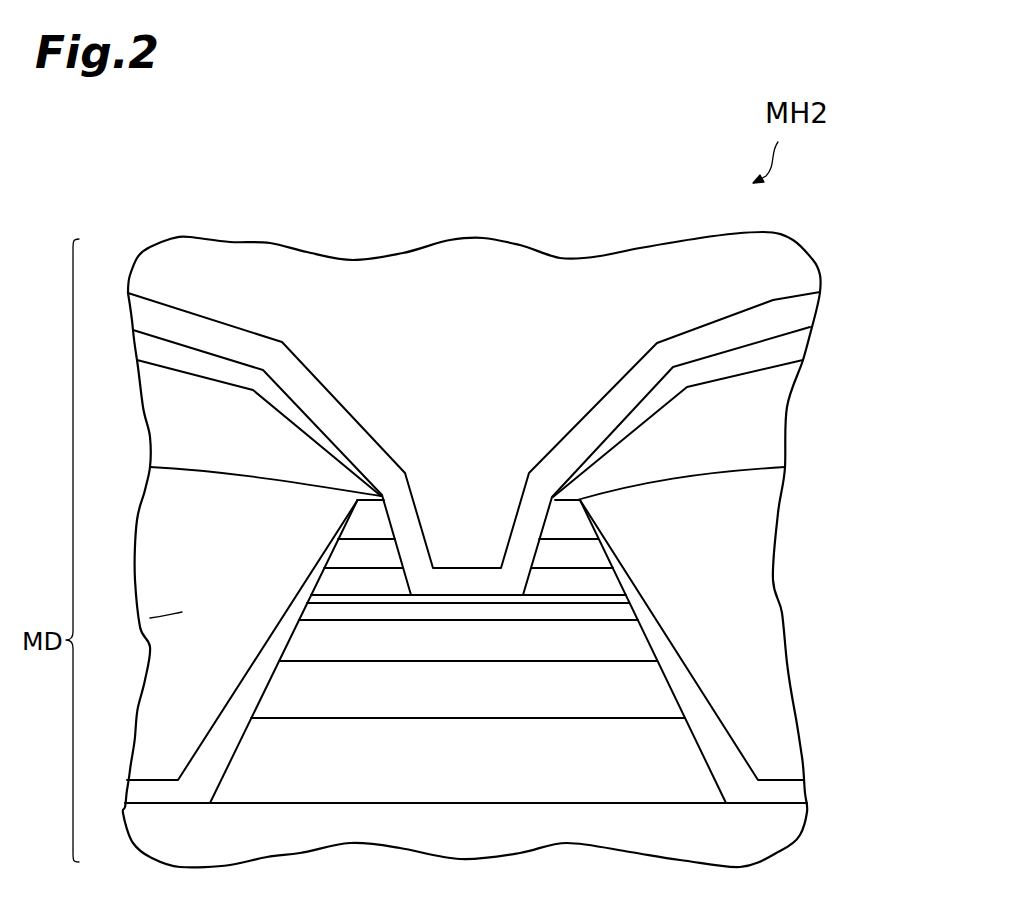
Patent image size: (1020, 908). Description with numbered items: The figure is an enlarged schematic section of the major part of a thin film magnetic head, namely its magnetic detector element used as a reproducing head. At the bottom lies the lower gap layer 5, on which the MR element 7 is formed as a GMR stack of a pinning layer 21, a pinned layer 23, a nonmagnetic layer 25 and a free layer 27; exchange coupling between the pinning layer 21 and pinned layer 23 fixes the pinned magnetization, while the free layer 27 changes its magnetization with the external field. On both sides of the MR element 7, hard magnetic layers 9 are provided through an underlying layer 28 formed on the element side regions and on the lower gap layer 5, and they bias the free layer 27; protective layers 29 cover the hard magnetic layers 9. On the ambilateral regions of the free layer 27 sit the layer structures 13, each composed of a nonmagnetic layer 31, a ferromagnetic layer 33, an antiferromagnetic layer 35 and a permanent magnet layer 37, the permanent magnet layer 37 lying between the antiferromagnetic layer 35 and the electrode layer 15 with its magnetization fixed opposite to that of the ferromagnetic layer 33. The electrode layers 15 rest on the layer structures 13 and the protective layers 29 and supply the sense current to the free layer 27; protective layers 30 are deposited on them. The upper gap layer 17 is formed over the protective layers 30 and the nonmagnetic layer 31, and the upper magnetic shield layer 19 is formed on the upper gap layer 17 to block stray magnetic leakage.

The lower gap layer 5 is at (808, 826).
The MR element 7 is at (866, 614).
The hard magnetic layers 9 is at (137, 709).
The layer structures 13 is at (866, 430).
The electrode layers 15 is at (141, 421).
The upper gap layer 17 is at (810, 318).
The upper magnetic shield layer 19 is at (820, 272).
The pinning layer 21 is at (697, 742).
The pinned layer 23 is at (672, 690).
The nonmagnetic layer 25 is at (657, 661).
The free layer 27 is at (638, 620).
The underlying layer 28 is at (128, 793).
The protective layers 29 is at (146, 491).
The protective layers 30 is at (134, 352).
The nonmagnetic layer 31 is at (309, 601).
The ferromagnetic layer 33 is at (318, 582).
The antiferromagnetic layer 35 is at (328, 560).
The permanent magnet layer 37 is at (346, 523).